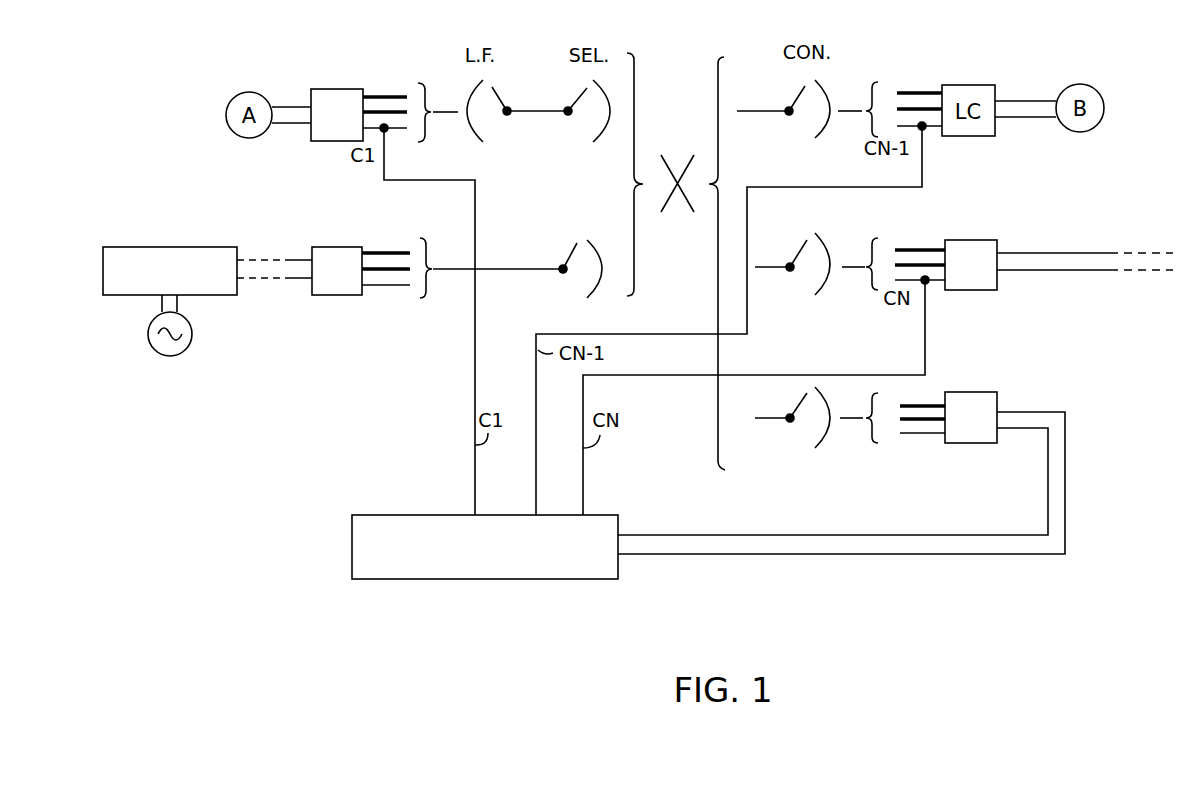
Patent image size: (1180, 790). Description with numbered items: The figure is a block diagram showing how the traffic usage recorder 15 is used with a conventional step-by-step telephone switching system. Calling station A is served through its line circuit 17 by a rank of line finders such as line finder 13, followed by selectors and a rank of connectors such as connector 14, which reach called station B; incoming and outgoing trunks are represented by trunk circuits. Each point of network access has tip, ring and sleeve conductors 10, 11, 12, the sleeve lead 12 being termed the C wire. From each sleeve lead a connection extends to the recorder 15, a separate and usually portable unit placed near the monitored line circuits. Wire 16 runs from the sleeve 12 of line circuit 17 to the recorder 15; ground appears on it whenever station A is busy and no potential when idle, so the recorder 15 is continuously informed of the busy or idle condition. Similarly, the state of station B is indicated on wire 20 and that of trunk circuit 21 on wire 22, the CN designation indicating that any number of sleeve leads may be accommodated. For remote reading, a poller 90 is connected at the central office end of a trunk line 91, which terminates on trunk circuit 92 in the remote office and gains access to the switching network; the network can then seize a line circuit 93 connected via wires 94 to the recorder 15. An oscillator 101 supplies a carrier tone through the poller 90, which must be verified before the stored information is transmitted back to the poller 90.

The tip conductor 10 is at (373, 95).
The ring conductor 11 is at (385, 108).
The sleeve conductor 12 is at (398, 131).
The line finder 13 is at (500, 96).
The connector 14 is at (800, 97).
The traffic usage recorder 15 is at (618, 521).
The wire 16 is at (475, 223).
The line circuit 17 is at (335, 89).
The wire 20 is at (813, 187).
The trunk circuit 21 is at (998, 239).
The wire 22 is at (815, 375).
The poller 90 is at (197, 247).
The trunk line 91 is at (295, 260).
The trunk circuit 92 is at (348, 247).
The line circuit 93 is at (1000, 394).
The wires 94 is at (878, 537).
The oscillator 101 is at (190, 345).